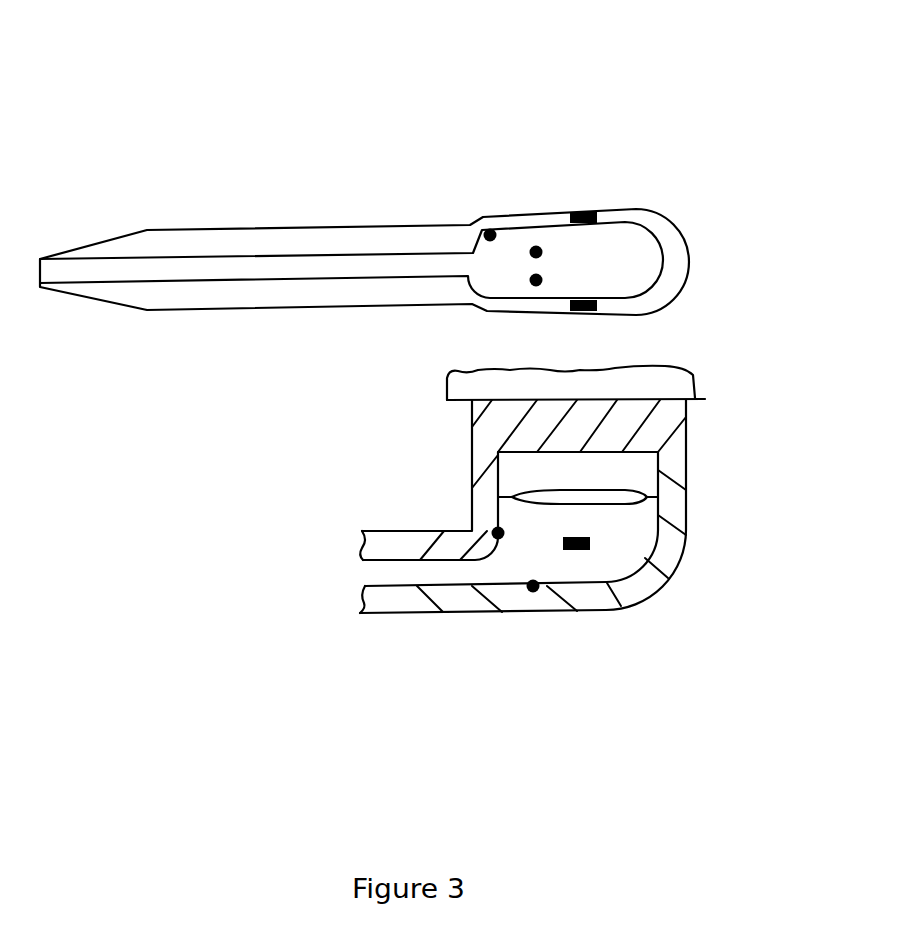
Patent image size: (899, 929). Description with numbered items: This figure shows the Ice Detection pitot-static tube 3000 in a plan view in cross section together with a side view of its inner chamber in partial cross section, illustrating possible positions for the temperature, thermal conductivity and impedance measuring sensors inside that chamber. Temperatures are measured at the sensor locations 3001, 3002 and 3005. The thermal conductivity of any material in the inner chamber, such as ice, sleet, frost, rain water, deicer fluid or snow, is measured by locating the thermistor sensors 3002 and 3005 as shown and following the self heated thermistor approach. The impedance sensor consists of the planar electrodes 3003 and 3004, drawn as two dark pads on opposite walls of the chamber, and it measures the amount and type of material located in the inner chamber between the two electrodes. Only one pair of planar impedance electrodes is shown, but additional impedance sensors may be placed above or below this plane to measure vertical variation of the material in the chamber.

The Ice Detection pitot-static tube 3000 is at (302, 67).
The temperature sensor location 3001 is at (490, 229).
The thermistor sensor 3002 is at (536, 246).
The planar electrode 3003 is at (583, 212).
The planar electrode 3004 is at (583, 312).
The thermistor sensor 3005 is at (537, 286).